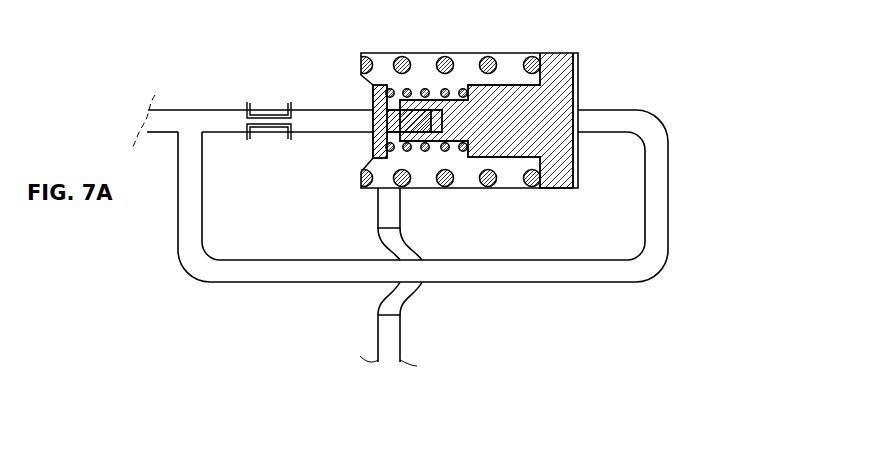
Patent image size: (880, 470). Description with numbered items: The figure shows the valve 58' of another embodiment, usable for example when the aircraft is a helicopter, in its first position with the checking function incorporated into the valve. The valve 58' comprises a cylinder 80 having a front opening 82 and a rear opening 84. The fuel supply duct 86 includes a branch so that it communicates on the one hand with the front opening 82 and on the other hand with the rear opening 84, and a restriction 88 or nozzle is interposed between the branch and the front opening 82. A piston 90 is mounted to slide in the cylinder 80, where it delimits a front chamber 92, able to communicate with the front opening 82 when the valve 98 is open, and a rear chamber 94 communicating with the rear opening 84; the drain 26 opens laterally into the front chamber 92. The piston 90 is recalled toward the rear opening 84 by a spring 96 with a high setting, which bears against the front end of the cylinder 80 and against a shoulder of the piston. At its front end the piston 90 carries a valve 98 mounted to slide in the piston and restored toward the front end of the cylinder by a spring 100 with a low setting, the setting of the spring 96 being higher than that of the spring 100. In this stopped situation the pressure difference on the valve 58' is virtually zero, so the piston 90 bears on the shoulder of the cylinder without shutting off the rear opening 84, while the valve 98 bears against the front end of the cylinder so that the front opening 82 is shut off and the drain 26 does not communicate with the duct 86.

The drain 26 is at (392, 339).
The valve 58' is at (725, 107).
The cylinder 80 is at (478, 195).
The front opening 82 is at (362, 120).
The rear opening 84 is at (586, 120).
The fuel supply duct 86 is at (161, 134).
The restriction 88 is at (270, 105).
The piston 90 is at (496, 126).
The front chamber 92 is at (433, 165).
The rear chamber 94 is at (587, 158).
The spring 96 is at (488, 60).
The valve 98 is at (420, 121).
The spring 100 is at (425, 89).